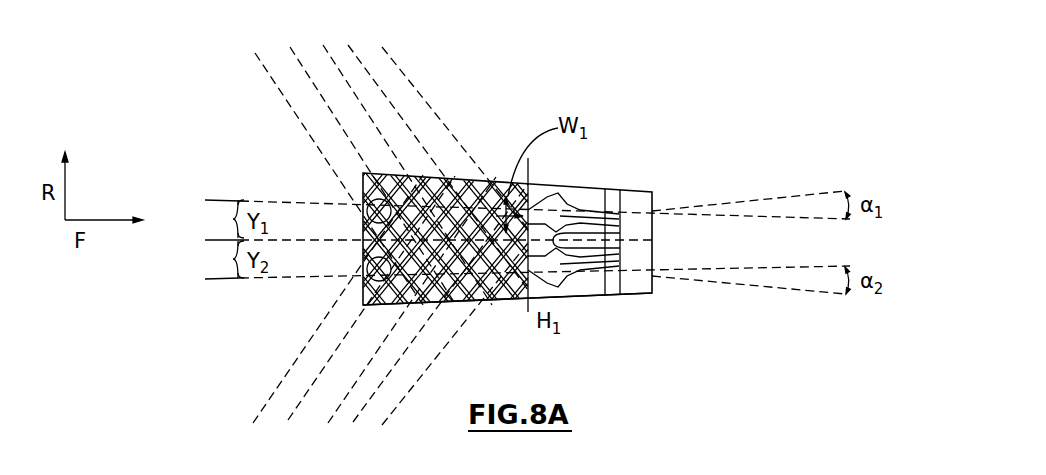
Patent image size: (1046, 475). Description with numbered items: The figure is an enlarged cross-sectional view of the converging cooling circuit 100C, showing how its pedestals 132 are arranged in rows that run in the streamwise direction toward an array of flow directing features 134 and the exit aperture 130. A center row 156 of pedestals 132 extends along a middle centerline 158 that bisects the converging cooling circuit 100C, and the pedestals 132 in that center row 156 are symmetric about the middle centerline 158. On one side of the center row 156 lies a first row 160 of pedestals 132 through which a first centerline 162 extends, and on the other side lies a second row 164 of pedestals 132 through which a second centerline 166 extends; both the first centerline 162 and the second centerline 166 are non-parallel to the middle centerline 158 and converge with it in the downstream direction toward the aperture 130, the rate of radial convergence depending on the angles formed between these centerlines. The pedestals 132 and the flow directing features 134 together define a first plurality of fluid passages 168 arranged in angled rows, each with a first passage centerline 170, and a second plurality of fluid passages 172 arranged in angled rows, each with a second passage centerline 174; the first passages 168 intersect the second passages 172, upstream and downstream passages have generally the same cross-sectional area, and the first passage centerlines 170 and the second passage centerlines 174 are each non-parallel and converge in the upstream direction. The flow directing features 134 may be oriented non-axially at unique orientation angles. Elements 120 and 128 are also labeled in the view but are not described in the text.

The converging cooling circuit 100C is at (490, 57).
The frame body 120 is at (580, 294).
The aperture 128 is at (368, 204).
The exit aperture 130 is at (652, 237).
The pedestals 132 is at (523, 214).
The flow directing features 134 is at (577, 240).
The center row 156 is at (362, 237).
The middle centerline 158 is at (228, 241).
The first row 160 is at (399, 189).
The first centerline 162 is at (246, 200).
The second row 164 is at (403, 293).
The second centerline 166 is at (217, 283).
The first plurality of fluid passages 168 is at (443, 187).
The first passage centerline 170 is at (420, 28).
The second plurality of fluid passages 172 is at (434, 304).
The second passage centerline 174 is at (393, 420).